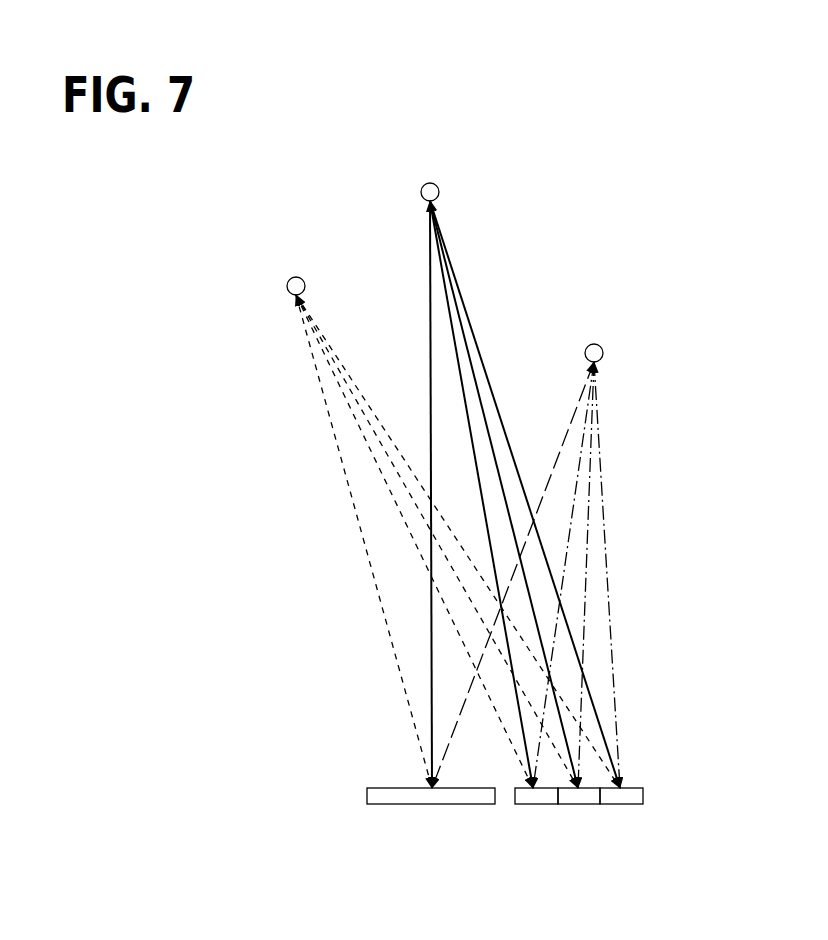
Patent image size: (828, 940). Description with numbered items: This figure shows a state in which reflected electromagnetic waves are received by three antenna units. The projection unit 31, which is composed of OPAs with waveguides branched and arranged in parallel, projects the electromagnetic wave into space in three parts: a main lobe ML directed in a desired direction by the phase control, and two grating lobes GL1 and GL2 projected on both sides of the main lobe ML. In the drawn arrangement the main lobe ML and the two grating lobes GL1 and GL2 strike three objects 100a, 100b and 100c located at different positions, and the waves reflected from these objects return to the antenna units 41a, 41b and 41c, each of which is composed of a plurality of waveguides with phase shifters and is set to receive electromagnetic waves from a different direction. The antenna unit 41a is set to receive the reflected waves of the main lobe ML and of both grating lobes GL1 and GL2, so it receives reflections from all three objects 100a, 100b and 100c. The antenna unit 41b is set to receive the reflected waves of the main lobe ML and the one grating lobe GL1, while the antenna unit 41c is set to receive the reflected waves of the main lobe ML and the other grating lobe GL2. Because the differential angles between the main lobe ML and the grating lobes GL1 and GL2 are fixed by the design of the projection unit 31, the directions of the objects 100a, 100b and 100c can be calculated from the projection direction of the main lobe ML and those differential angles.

The object 100a is at (430, 183).
The object 100b is at (293, 277).
The object 100c is at (596, 344).
The projection unit 31 is at (391, 805).
The antenna unit 41a is at (580, 805).
The antenna unit 41b is at (533, 805).
The antenna unit 41c is at (622, 805).
The main lobe ML is at (430, 588).
The grating lobe GL1 is at (345, 470).
The grating lobe GL2 is at (470, 690).